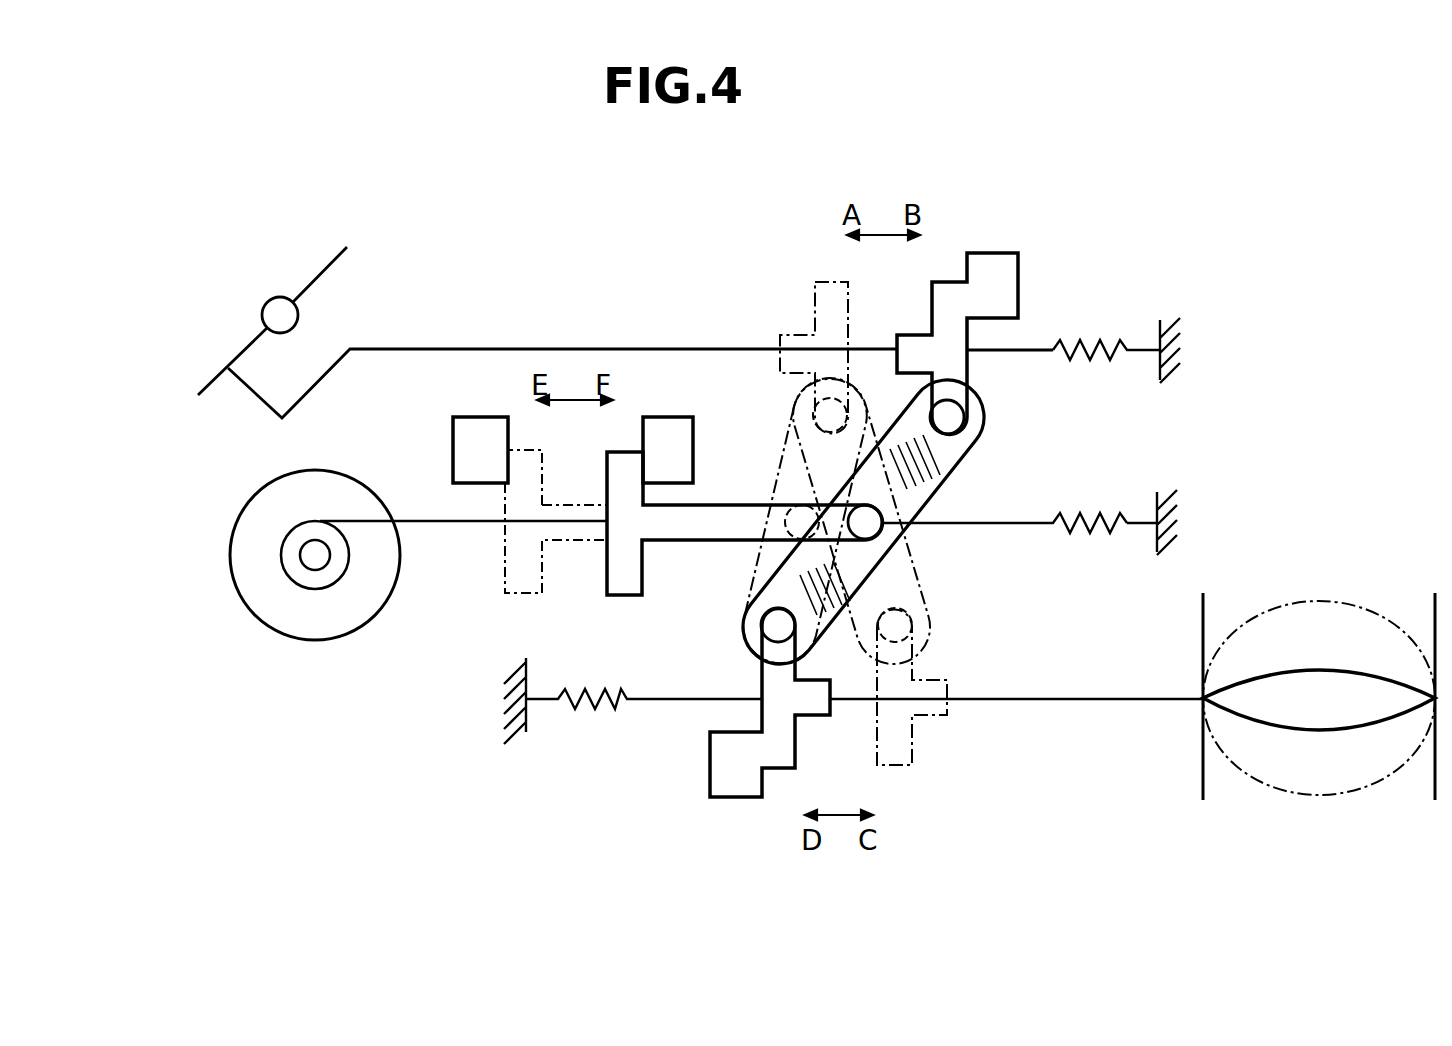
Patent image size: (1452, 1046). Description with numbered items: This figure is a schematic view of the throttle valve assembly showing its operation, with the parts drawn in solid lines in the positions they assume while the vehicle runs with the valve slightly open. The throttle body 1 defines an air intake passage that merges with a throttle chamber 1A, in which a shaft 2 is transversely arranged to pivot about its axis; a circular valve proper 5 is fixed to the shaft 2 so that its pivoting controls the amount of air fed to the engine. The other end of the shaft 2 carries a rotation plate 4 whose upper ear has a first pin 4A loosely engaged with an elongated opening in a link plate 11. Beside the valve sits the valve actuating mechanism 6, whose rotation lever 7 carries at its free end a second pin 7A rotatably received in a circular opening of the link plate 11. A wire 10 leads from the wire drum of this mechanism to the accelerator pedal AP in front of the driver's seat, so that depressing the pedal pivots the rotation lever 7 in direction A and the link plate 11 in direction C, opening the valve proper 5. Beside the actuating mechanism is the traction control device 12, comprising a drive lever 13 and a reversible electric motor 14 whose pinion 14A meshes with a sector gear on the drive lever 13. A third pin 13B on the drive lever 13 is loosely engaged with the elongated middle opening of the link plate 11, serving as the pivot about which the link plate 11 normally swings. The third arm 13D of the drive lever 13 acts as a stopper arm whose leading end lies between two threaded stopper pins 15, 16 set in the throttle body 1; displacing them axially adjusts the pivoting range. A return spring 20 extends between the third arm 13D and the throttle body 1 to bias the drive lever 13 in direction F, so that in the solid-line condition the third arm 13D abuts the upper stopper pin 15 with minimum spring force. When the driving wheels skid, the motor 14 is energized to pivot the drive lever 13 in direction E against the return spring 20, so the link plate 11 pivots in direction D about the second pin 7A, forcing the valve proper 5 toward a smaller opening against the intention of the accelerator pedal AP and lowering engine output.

The accelerator pedal AP is at (318, 278).
The wire 10 is at (632, 349).
The valve actuating mechanism 6 is at (1108, 300).
The rotation lever 7 is at (948, 290).
The second pin 7A is at (965, 418).
The link plate 11 is at (940, 468).
The return spring 20 is at (1087, 505).
The throttle body 1 is at (1150, 540).
The third pin 13B is at (878, 537).
The drive lever 13 is at (622, 583).
The third arm 13D is at (623, 460).
The upper stopper pin 15 is at (693, 445).
The stopper pin 16 is at (455, 437).
The electric motor 14 is at (278, 632).
The pinion 14A is at (292, 548).
The traction control device 12 is at (430, 572).
The rotation plate 4 is at (780, 740).
The first pin 4A is at (765, 630).
The shaft 2 is at (1060, 700).
The throttle chamber 1A is at (1435, 607).
The valve proper 5 is at (1335, 720).